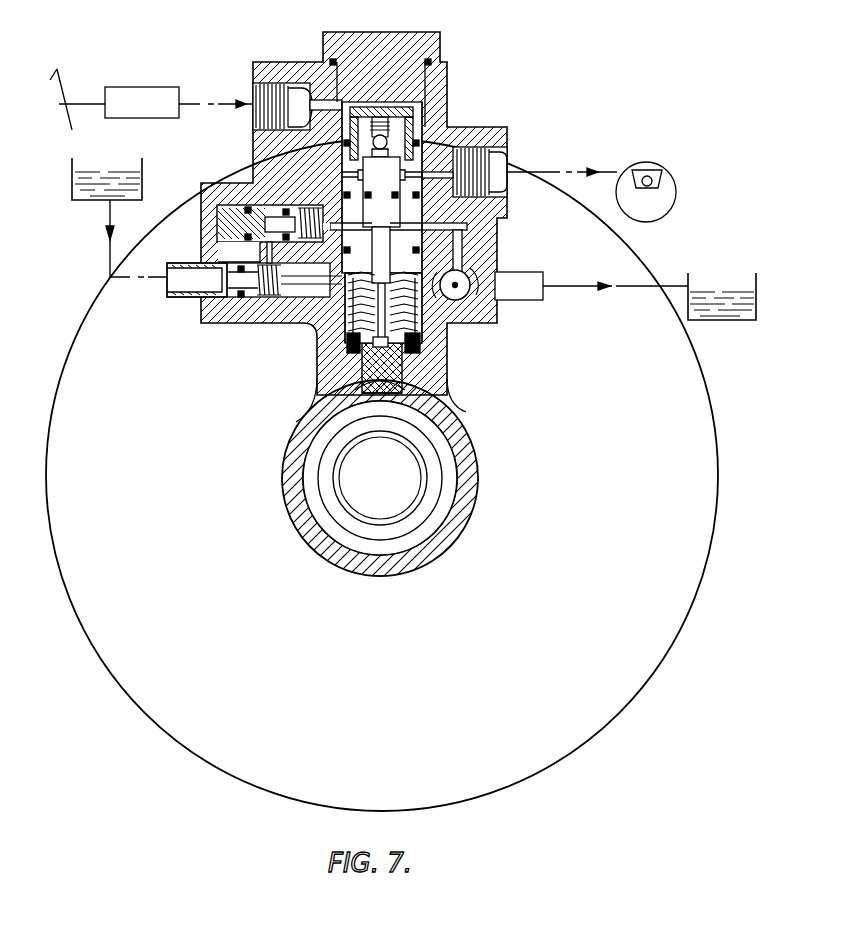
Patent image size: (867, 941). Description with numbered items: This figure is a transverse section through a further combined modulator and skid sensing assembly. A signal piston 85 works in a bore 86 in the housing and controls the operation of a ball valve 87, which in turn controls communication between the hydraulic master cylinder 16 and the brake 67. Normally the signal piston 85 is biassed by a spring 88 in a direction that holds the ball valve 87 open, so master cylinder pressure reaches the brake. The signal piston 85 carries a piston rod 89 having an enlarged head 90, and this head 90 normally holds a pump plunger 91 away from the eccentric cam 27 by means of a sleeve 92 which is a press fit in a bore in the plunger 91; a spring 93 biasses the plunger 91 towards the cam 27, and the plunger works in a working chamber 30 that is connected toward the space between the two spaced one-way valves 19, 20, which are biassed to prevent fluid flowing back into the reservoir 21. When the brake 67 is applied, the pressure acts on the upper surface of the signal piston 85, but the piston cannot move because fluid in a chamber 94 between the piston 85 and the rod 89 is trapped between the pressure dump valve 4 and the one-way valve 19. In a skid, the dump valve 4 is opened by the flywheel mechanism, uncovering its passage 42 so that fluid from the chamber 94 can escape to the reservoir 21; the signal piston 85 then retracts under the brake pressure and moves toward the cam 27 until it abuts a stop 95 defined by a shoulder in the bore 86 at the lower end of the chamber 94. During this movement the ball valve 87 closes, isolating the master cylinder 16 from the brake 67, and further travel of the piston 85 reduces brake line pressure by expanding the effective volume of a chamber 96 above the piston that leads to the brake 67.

The pressure dump valve 4 is at (466, 297).
The hydraulic master cylinder 16 is at (138, 95).
The one-way valve 19 is at (303, 217).
The one-way valve 20 is at (254, 320).
The reservoir 21 is at (98, 192).
The eccentric cam 27 is at (327, 480).
The working chamber 30 is at (420, 332).
The passage 42 is at (497, 274).
The brake 67 is at (658, 208).
The signal piston 85 is at (350, 187).
The bore 86 is at (418, 175).
The ball valve 87 is at (352, 150).
The spring 88 is at (404, 362).
The piston rod 89 is at (350, 262).
The enlarged head 90 is at (408, 375).
The pump plunger 91 is at (364, 378).
The sleeve 92 is at (346, 342).
The spring 93 is at (348, 306).
The chamber 94 is at (440, 198).
The stop 95 is at (460, 186).
The chamber 96 is at (440, 110).